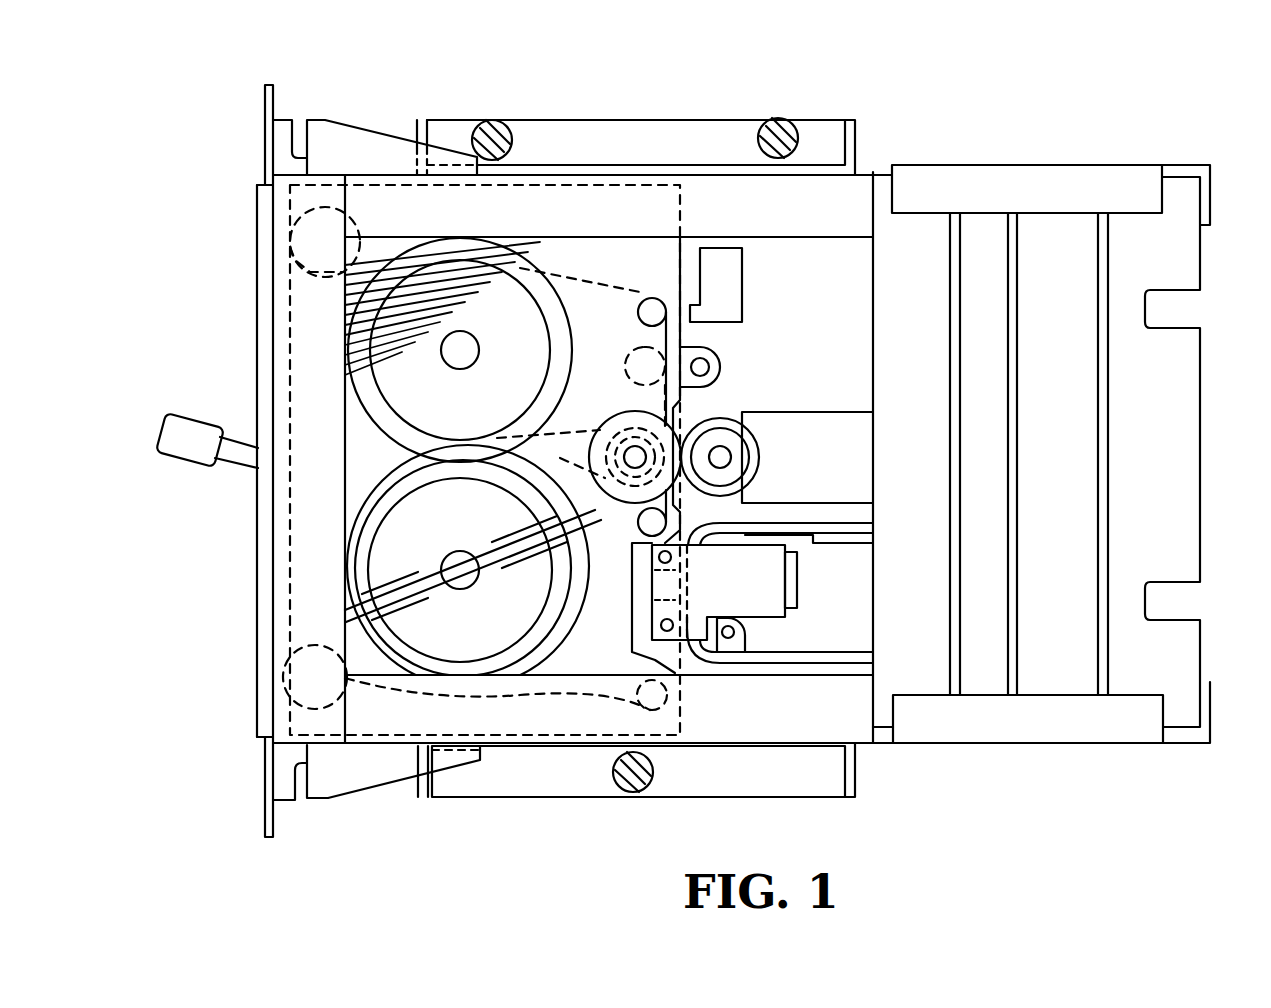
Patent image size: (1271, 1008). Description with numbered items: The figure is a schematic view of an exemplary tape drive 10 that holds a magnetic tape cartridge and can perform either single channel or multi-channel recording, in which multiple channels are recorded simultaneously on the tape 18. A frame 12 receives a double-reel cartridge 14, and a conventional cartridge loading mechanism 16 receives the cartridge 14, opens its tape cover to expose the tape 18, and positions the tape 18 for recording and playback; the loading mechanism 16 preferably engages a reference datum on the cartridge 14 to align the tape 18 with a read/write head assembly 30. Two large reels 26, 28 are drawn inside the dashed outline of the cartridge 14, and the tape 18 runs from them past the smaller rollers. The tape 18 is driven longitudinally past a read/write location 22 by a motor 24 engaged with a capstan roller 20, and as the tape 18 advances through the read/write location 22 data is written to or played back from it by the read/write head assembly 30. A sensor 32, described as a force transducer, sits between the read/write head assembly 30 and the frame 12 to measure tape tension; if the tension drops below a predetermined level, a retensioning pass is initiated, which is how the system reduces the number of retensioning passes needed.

The tape drive 10 is at (1018, 92).
The frame 12 is at (342, 123).
The double-reel cartridge 14 is at (598, 262).
The cartridge loading mechanism 16 is at (186, 418).
The tape 18 is at (566, 700).
The capstan roller 20 is at (630, 412).
The read/write location 22 is at (628, 580).
The motor 24 is at (725, 417).
The supply spool 26 is at (372, 318).
The take-up spool 28 is at (392, 545).
The read/write head assembly 30 is at (850, 641).
The sensor 32 is at (797, 585).